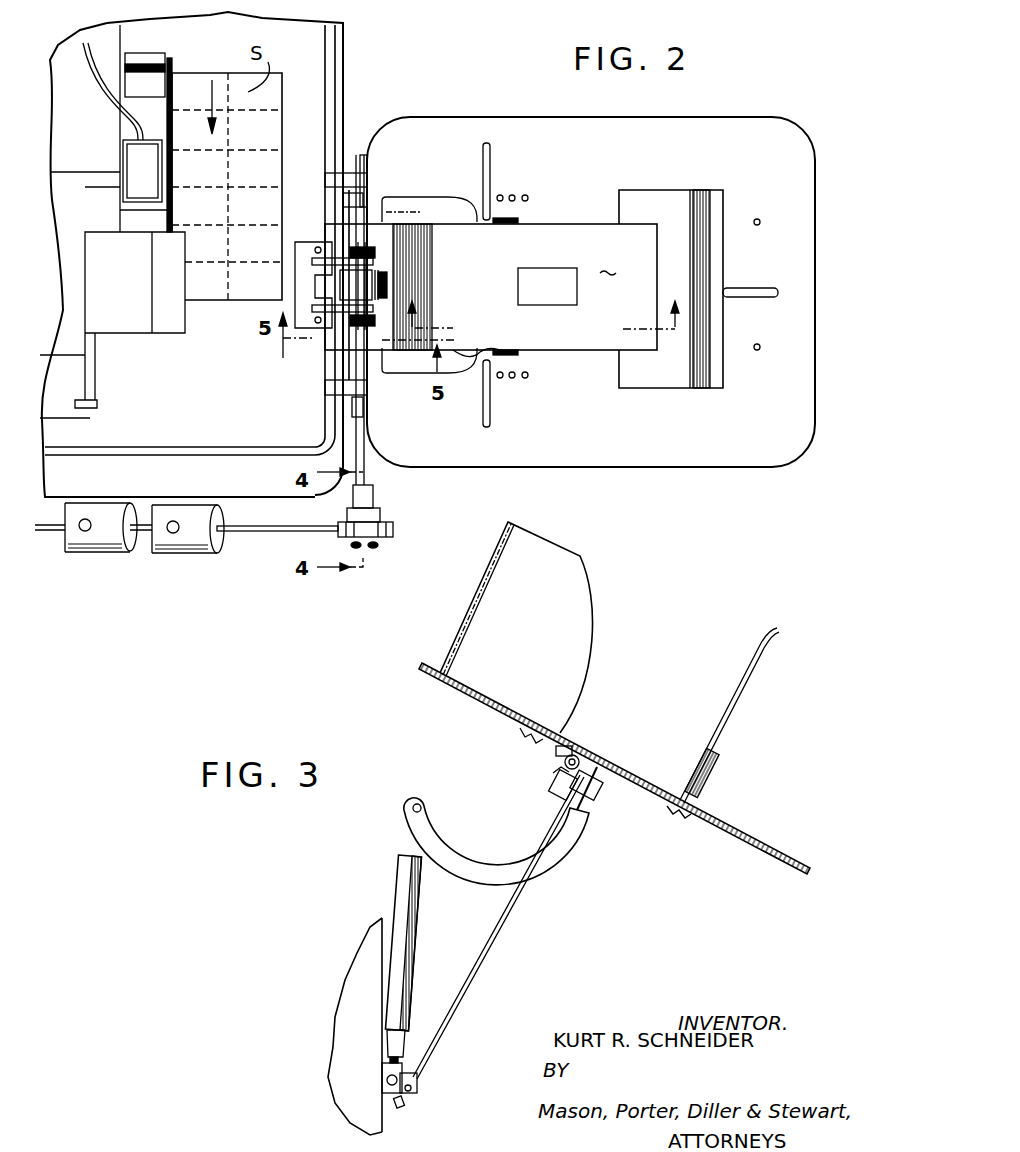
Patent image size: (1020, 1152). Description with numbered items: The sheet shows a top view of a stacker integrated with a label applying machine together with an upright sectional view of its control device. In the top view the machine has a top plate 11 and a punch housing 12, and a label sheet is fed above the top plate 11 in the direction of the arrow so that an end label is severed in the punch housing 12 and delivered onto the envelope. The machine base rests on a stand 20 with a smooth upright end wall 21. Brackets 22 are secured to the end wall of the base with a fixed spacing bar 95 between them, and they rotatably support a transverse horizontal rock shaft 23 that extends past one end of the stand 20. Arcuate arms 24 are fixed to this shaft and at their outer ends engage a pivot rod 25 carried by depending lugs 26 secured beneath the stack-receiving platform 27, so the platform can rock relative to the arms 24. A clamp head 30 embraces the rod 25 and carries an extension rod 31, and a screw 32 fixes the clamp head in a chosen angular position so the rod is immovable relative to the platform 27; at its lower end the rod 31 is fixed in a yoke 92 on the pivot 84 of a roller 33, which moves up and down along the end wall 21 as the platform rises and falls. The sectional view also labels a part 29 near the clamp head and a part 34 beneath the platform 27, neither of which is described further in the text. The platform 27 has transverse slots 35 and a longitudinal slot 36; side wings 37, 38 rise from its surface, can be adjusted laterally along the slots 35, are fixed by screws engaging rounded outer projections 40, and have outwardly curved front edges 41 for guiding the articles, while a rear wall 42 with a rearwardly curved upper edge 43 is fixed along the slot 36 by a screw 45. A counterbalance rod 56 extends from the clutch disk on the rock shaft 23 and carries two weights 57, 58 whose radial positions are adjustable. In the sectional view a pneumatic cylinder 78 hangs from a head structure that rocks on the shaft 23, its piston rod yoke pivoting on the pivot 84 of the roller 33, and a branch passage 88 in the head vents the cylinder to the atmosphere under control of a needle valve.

In FIG. 2, the top plate 11 is at (310, 77).
In FIG. 2, the punch housing 12 is at (120, 322).
In FIG. 2, the stand 20 is at (63, 487).
In FIG. 3, the end wall 21 is at (390, 1127).
In FIG. 2, the brackets 22 is at (362, 175).
In FIG. 2, the rock shaft 23 is at (367, 462).
In FIG. 3, the rock shaft 23 is at (423, 803).
In FIG. 3, the arms 24 is at (528, 873).
In FIG. 3, the pivot rod 25 is at (557, 765).
In FIG. 3, the depending lugs 26 is at (563, 747).
In FIG. 2, the stack-receiving platform 27 is at (740, 132).
In FIG. 3, the stack-receiving platform 27 is at (725, 827).
In FIG. 3, the pin 29 is at (560, 770).
In FIG. 3, the clamp head 30 is at (578, 755).
In FIG. 3, the extension rod 31 is at (453, 1000).
In FIG. 3, the screw 32 is at (583, 795).
In FIG. 3, the roller 33 is at (382, 1083).
In FIG. 3, the clip 34 is at (518, 732).
In FIG. 2, the transverse slots 35 is at (487, 178).
In FIG. 2, the longitudinal slot 36 is at (748, 292).
In FIG. 2, the side wing 37 is at (468, 226).
In FIG. 3, the side wing 37 is at (555, 665).
In FIG. 2, the side wing 38 is at (468, 345).
In FIG. 2, the rounded outer projections 40 is at (500, 220).
In FIG. 2, the curved front edges 41 is at (395, 207).
In FIG. 2, the rear wall 42 is at (642, 202).
In FIG. 3, the rear wall 42 is at (728, 700).
In FIG. 2, the curved upper edge 43 is at (713, 387).
In FIG. 3, the screw 45 is at (677, 822).
In FIG. 2, the counterbalance rod 56 is at (258, 533).
In FIG. 2, the weight 57 is at (173, 550).
In FIG. 2, the weight 58 is at (93, 550).
In FIG. 3, the pneumatic cylinder 78 is at (407, 972).
In FIG. 3, the pivot 84 is at (385, 1090).
In FIG. 2, the branch passage 88 is at (365, 543).
In FIG. 3, the yoke 92 is at (415, 1087).
In FIG. 2, the spacing bar 95 is at (360, 362).